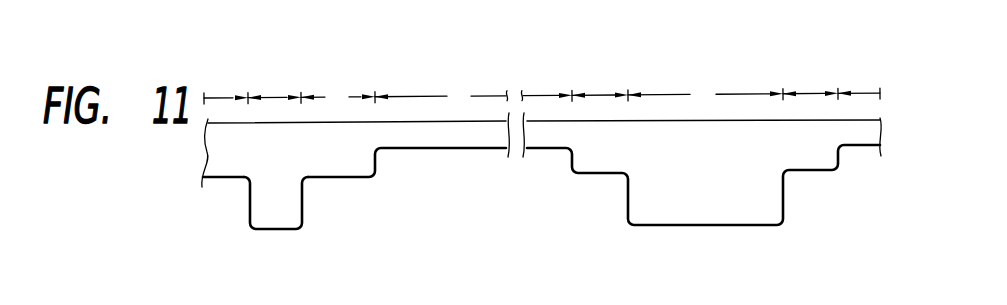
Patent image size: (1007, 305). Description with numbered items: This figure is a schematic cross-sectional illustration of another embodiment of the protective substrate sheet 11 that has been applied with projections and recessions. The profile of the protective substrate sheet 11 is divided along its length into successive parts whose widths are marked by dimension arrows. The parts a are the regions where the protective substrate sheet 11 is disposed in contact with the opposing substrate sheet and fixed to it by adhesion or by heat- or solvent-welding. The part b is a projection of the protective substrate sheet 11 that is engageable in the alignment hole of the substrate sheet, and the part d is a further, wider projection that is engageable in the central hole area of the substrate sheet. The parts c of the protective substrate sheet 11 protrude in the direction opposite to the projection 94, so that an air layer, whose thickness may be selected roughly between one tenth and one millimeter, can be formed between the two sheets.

The protective substrate sheet 11 is at (542, 171).
The projection 94 is at (295, 213).
The part a is at (521, 89).
The part b is at (274, 86).
The part c is at (627, 88).
The part d is at (705, 93).